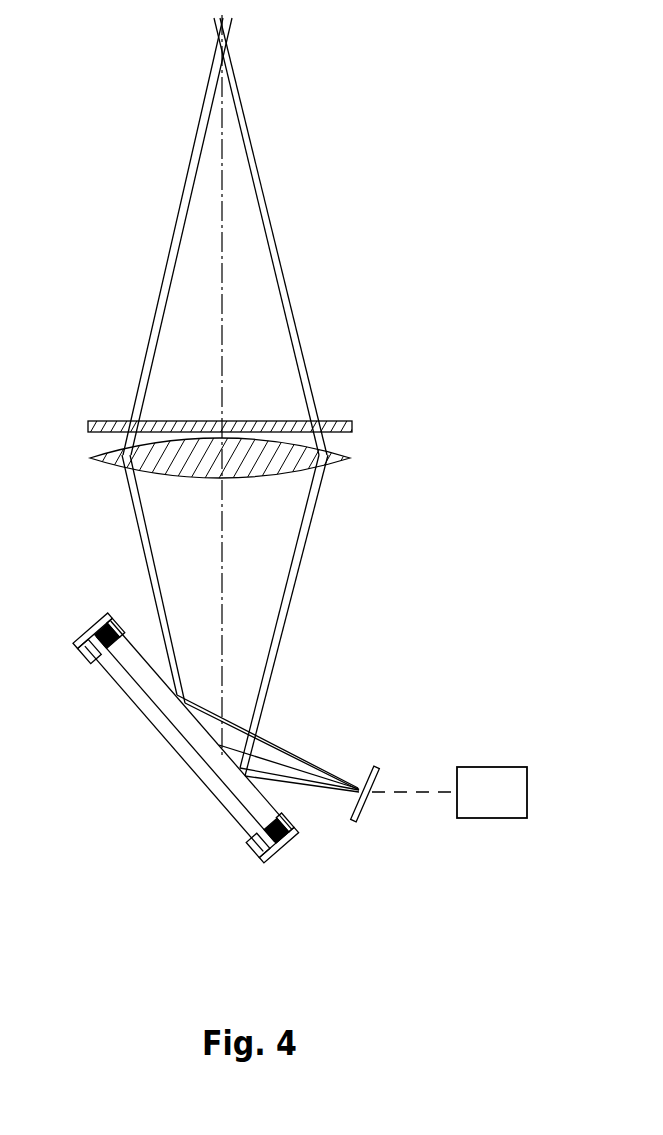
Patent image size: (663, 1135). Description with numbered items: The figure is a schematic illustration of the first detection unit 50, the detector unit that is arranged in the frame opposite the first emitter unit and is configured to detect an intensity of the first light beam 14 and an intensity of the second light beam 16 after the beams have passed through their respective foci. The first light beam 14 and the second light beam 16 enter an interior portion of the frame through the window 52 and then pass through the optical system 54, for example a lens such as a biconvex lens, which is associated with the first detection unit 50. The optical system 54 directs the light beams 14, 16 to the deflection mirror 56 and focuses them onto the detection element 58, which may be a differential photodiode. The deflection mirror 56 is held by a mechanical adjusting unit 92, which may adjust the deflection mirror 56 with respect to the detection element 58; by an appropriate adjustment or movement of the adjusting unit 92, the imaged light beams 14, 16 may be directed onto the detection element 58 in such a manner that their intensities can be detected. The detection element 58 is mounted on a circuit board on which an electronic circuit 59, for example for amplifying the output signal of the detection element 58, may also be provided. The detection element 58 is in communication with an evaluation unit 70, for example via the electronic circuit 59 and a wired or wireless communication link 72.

The first light beam 14 is at (270, 222).
The second light beam 16 is at (158, 300).
The first detection unit 50 is at (140, 855).
The window 52 is at (352, 426).
The optical system 54 is at (347, 458).
The deflection mirror 56 is at (275, 842).
The detection element 58 is at (358, 787).
The electronic circuit 59 is at (378, 781).
The evaluation unit 70 is at (520, 785).
The communication link 72 is at (425, 795).
The mechanical adjusting unit 92 is at (173, 743).